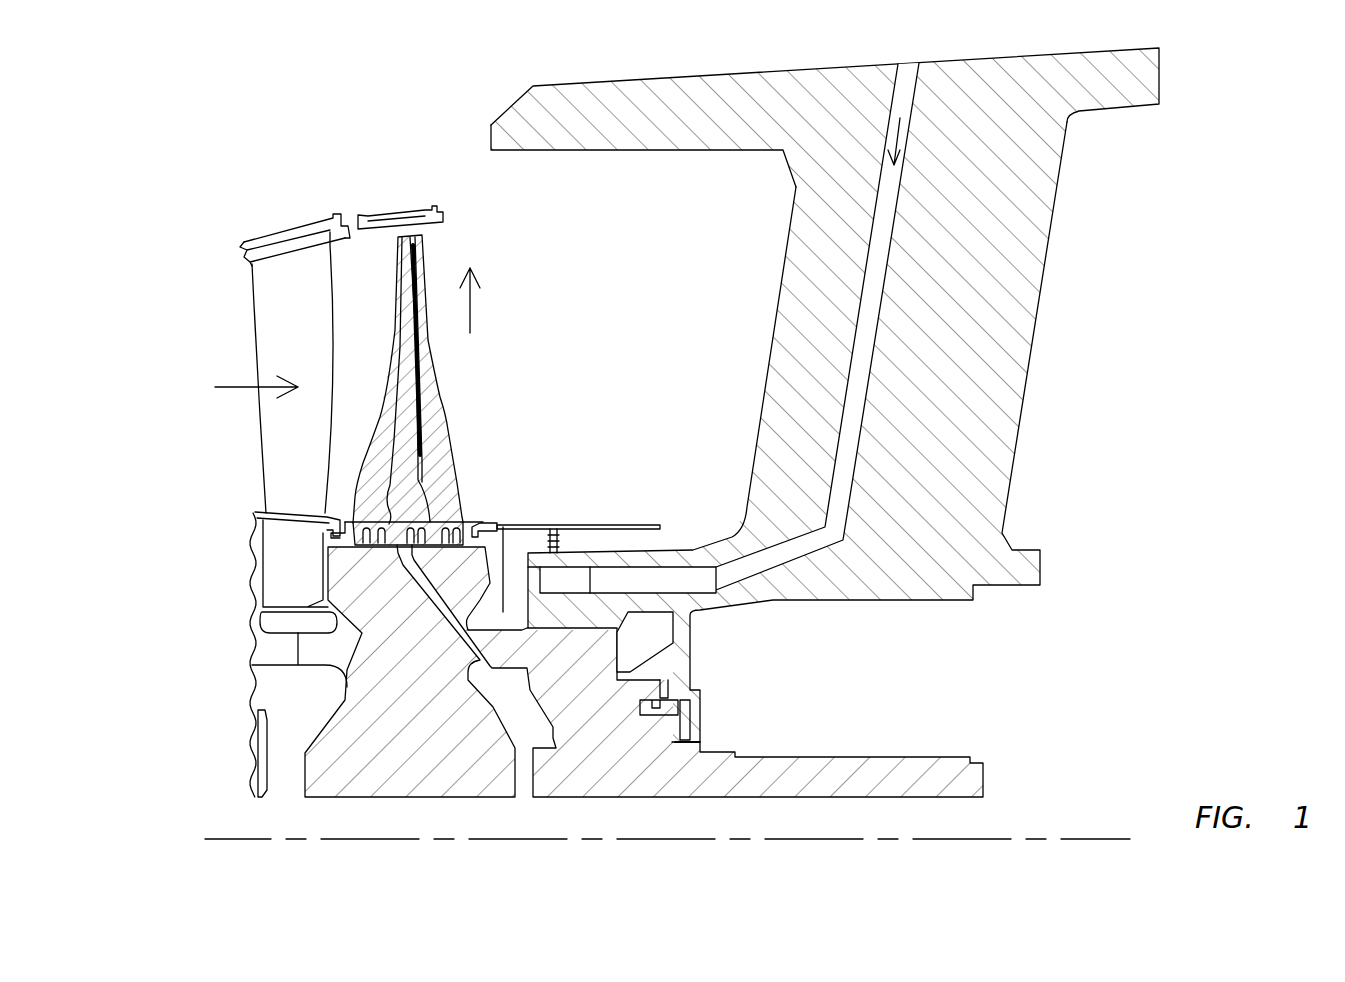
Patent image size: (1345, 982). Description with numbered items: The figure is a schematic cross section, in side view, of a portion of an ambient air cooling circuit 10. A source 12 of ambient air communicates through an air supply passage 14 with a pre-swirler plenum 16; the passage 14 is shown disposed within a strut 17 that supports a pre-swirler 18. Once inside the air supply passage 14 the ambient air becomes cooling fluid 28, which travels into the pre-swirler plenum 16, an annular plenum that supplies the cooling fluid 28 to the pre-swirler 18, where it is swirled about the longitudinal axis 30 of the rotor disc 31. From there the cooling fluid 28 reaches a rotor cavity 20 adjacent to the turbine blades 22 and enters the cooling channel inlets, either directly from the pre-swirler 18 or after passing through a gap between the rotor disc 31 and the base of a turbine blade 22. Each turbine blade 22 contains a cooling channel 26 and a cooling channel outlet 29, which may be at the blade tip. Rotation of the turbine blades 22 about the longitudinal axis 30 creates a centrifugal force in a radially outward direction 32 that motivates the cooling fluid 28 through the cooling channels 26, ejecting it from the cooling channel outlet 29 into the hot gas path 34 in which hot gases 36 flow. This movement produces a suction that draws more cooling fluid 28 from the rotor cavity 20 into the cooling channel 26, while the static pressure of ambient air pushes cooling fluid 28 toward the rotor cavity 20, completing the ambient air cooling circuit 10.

The ambient air cooling circuit 10 is at (360, 90).
The source of ambient air 12 is at (812, 36).
The air supply passage 14 is at (864, 282).
The pre-swirler plenum 16 is at (673, 582).
The strut 17 is at (1045, 261).
The pre-swirler 18 is at (540, 578).
The rotor cavity 20 is at (503, 527).
The turbine blades 22 is at (437, 395).
The cooling channel 26 is at (413, 310).
The cooling fluid 28 is at (914, 43).
The cooling channel outlet 29 is at (412, 235).
The longitudinal axis 30 is at (997, 833).
The rotor disc 31 is at (398, 747).
The radially outward direction 32 is at (472, 313).
The hot gas path 34 is at (187, 313).
The hot gases 36 is at (238, 367).